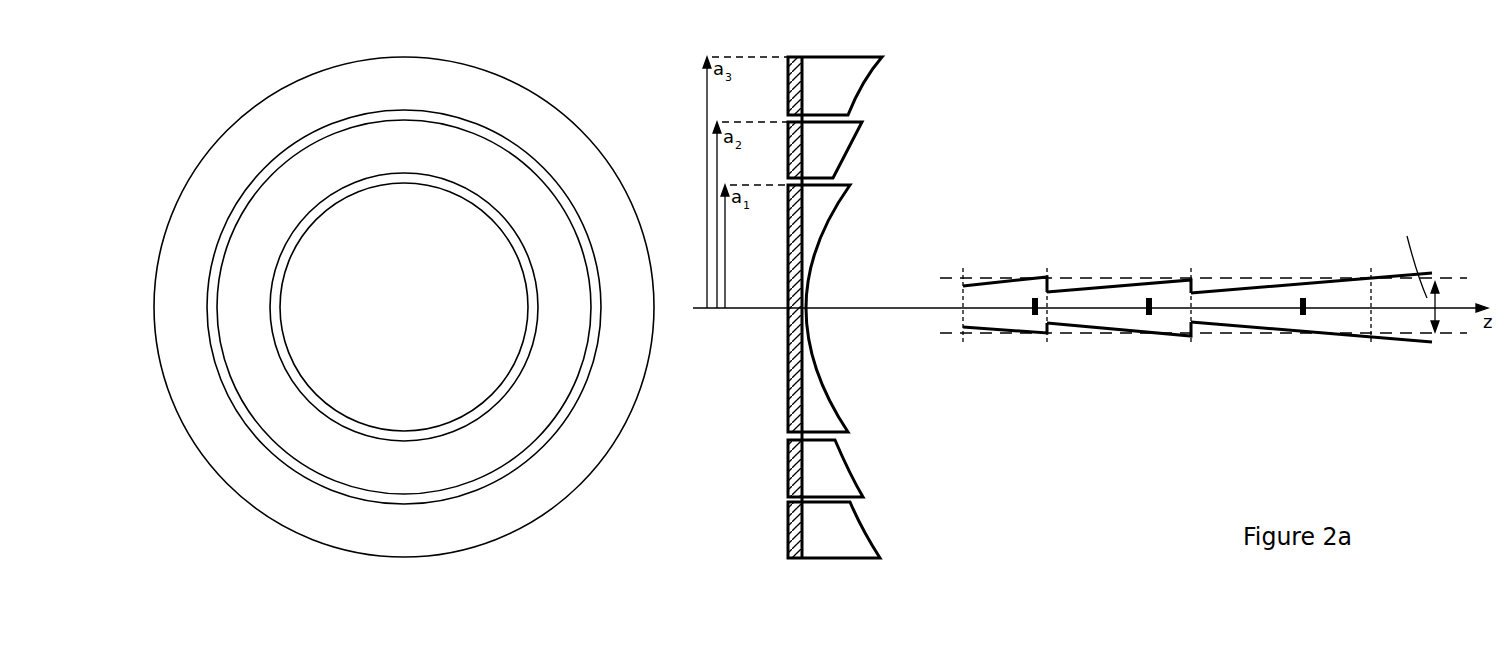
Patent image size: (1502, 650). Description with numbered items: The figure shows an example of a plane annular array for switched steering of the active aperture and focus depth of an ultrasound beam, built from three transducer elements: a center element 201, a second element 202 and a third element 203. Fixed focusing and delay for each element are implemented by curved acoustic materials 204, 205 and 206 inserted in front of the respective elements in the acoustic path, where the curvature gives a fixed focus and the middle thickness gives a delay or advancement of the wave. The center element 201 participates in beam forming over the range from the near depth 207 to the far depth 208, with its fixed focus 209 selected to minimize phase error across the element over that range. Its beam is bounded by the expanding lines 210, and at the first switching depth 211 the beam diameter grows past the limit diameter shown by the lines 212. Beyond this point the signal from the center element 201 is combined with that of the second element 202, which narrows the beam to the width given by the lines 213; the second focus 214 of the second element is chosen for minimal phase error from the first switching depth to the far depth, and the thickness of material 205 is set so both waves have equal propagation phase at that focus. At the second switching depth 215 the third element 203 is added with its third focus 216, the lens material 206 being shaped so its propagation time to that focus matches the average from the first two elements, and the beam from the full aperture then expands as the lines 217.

The center element 201 is at (521, 307).
The second element 202 is at (490, 307).
The third element 203 is at (463, 307).
The acoustic material 204 is at (828, 308).
The acoustic material 205 is at (841, 309).
The acoustic material 206 is at (849, 307).
The near range z_n 207 is at (962, 334).
The far range z_f 208 is at (1380, 334).
The fixed focus F1 209 is at (1037, 337).
The expanding lines 210 is at (1010, 326).
The depth z_1 211 is at (1058, 334).
The limit diameter d_F1 212 is at (1467, 333).
The example lines 213 is at (1117, 281).
The fixed focus F2 214 is at (1142, 303).
The depth z_2 215 is at (1197, 334).
The focus F3 216 is at (1297, 310).
The beam width lines 217 is at (1282, 328).